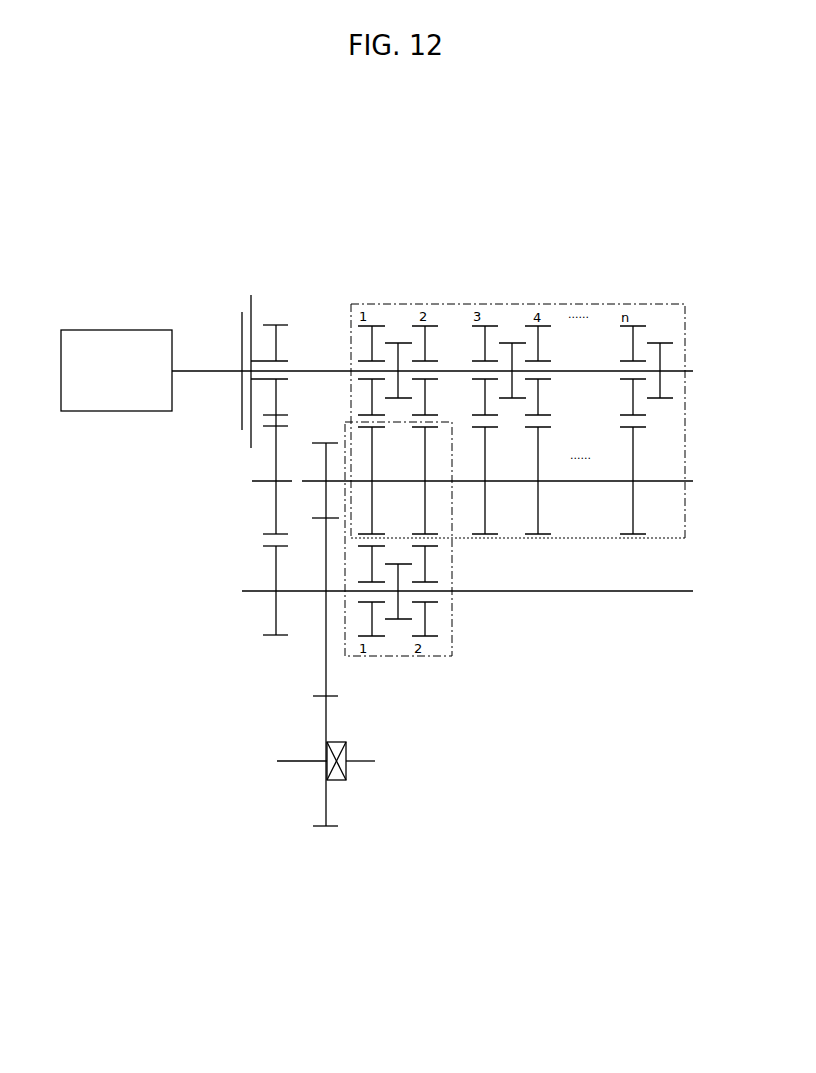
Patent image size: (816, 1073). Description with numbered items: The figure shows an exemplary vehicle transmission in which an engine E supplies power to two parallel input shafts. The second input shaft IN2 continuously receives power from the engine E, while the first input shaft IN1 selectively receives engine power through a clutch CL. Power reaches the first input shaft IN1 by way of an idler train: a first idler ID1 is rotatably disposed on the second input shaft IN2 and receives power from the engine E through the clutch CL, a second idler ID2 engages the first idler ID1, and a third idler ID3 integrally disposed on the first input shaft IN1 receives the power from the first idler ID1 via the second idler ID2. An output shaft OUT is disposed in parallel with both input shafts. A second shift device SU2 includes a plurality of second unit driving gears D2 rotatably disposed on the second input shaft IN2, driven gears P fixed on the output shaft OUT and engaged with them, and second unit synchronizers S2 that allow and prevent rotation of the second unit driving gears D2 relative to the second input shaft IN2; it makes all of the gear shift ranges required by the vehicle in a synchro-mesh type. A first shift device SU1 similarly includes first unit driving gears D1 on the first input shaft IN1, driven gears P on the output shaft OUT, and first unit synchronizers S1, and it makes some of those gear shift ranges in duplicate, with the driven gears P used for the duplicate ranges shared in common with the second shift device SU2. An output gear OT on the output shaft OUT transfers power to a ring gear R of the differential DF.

The engine E is at (119, 330).
The clutch CL is at (244, 294).
The first idler ID1 is at (276, 325).
The second idler ID2 is at (262, 540).
The third idler ID3 is at (277, 637).
The output gear OT is at (315, 443).
The ring gear R is at (327, 830).
The differential DF is at (298, 784).
The first input shaft IN1 is at (670, 590).
The second input shaft IN2 is at (692, 368).
The output shaft OUT is at (678, 481).
The first shift device SU1 is at (452, 636).
The second shift device SU2 is at (573, 300).
The first unit driving gear D1 is at (372, 637).
The second unit driving gear D2 is at (373, 325).
The first unit synchronizer S1 is at (398, 620).
The second unit synchronizer S2 is at (398, 343).
The driven gear P is at (633, 535).